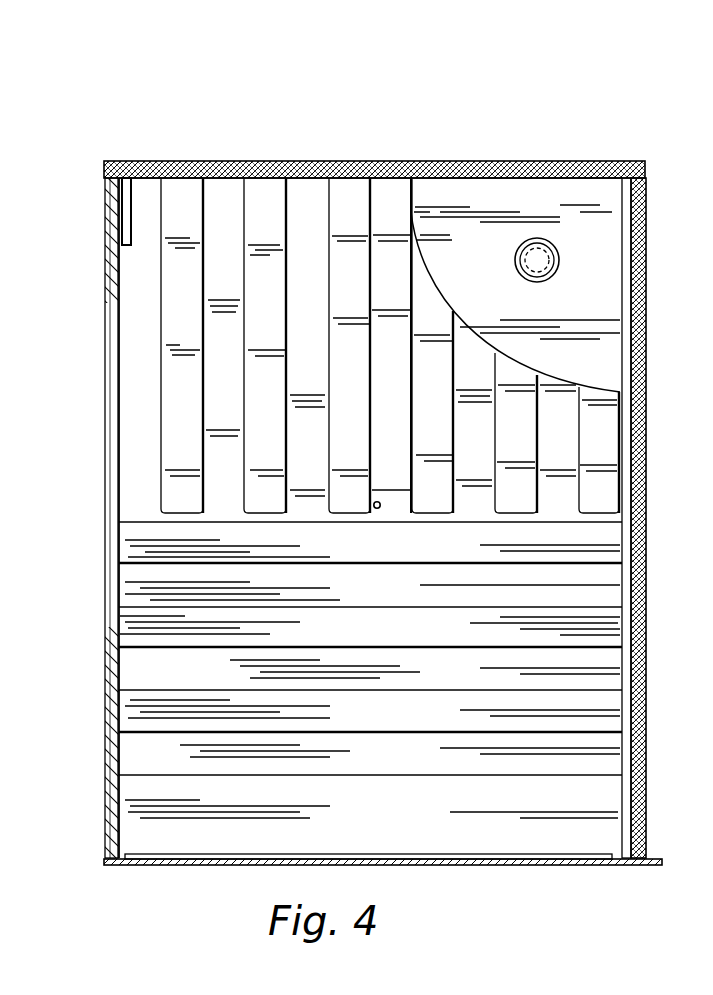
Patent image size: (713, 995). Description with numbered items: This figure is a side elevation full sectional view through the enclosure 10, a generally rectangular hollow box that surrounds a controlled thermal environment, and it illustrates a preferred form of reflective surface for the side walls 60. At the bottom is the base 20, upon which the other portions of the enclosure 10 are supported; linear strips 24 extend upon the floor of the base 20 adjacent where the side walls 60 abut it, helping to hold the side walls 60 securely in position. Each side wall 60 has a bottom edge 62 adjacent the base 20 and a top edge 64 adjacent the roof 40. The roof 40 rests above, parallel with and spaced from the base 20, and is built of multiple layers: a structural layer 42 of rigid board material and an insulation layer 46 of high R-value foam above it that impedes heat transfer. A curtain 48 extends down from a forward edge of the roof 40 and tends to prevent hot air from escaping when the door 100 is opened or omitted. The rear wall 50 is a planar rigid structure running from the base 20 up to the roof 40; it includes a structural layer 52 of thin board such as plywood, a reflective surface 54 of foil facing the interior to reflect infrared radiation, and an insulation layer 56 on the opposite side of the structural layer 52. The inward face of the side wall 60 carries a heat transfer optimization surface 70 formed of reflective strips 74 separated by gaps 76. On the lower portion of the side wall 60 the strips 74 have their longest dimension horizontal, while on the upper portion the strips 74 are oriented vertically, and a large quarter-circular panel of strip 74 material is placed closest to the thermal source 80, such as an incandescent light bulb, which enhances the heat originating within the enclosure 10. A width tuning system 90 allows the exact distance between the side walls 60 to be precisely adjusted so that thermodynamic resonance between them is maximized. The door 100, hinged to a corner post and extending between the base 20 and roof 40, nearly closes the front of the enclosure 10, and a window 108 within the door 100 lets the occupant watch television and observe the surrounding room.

The enclosure 10 is at (486, 148).
The base 20 is at (448, 866).
The linear strips 24 is at (160, 838).
The roof 40 is at (112, 161).
The structural layer 42 is at (272, 161).
The insulation layer 46 is at (340, 161).
The curtain 48 is at (131, 223).
The rear wall 50 is at (645, 397).
The structural layer 52 is at (647, 442).
The reflective surface 54 is at (622, 532).
The insulation layer 56 is at (645, 494).
The side walls 60 is at (133, 343).
The bottom edges 62 is at (562, 843).
The top edges 64 is at (395, 212).
The heat transfer optimization surface 70 is at (143, 585).
The reflective strips 74 is at (197, 474).
The gaps 76 is at (238, 432).
The thermal source 80 is at (546, 247).
The width tuning system 90 is at (380, 509).
The door 100 is at (107, 688).
The window 108 is at (120, 612).